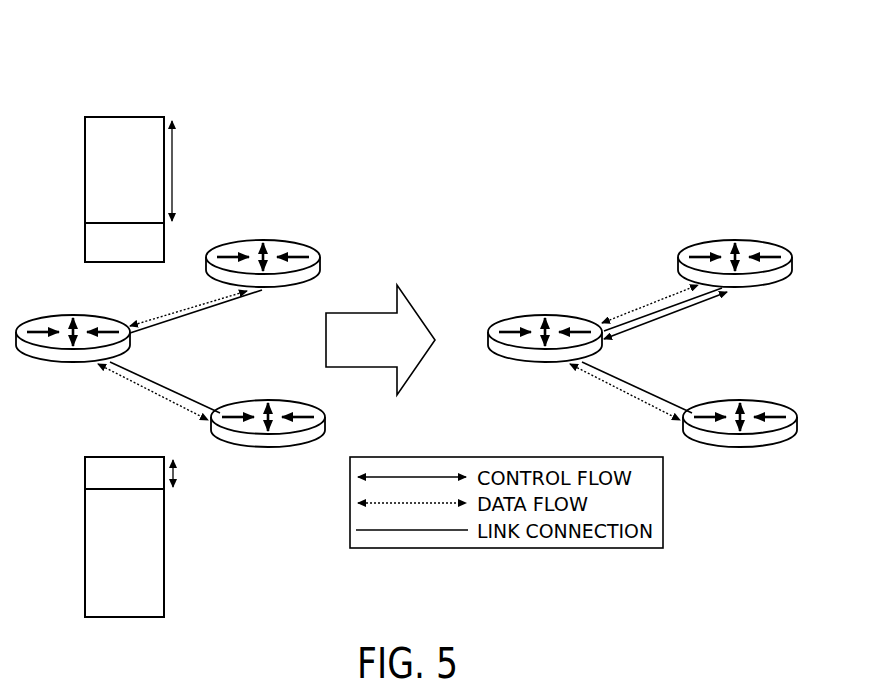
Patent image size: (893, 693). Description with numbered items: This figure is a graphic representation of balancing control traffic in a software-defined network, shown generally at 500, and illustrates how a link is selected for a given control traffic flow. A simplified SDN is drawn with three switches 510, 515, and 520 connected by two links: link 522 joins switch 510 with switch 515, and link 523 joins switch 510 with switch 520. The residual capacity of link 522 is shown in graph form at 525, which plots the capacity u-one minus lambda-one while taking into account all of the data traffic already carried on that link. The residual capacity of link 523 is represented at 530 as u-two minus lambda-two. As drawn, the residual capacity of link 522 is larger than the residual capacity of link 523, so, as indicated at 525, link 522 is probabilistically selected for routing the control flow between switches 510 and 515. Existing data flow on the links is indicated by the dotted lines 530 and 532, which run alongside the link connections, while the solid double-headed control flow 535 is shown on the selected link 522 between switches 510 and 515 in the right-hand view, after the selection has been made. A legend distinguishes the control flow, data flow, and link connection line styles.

The balancing of control traffic 500 is at (735, 78).
The switch 510 is at (57, 315).
The switch 515 is at (301, 242).
The switch 520 is at (274, 401).
The link 522 is at (217, 305).
The link 523 is at (163, 368).
The residual capacity graph 525 is at (100, 116).
The residual capacity graph / data flow line 530 is at (95, 618).
The data flow line 532 is at (142, 388).
The control flow 535 is at (668, 313).